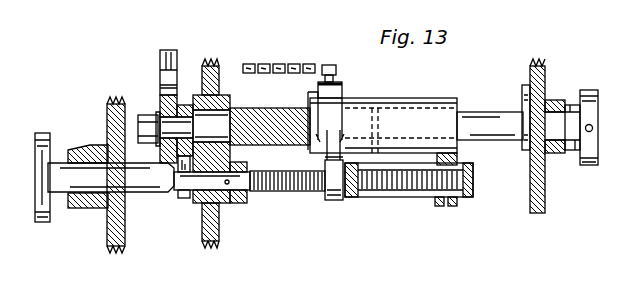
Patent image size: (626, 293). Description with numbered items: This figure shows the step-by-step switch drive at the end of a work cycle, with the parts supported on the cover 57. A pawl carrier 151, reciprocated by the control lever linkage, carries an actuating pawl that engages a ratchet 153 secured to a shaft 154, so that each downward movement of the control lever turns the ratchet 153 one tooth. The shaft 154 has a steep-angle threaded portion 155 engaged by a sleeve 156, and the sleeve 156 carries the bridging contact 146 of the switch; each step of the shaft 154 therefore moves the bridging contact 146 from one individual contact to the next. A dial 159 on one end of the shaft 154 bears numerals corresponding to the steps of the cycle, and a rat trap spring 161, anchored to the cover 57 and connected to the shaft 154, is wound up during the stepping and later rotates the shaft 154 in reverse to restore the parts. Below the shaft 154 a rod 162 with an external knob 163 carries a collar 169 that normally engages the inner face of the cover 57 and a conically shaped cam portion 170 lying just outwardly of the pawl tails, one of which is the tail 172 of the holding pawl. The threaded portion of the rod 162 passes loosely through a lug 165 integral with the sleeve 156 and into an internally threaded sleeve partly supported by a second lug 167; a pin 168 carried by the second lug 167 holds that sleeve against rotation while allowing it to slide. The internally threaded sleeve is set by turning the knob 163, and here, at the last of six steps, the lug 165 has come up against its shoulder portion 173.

The cover 57 is at (108, 117).
The bridging contact 146 is at (272, 64).
The pawl carrier 151 is at (162, 80).
The ratchet 153 is at (183, 97).
The shaft 154 is at (505, 142).
The threaded portion 155 is at (258, 108).
The sleeve 156 is at (384, 98).
The dial 159 is at (588, 90).
The rat trap spring 161 is at (522, 100).
The rod 162 is at (157, 192).
The knob 163 is at (41, 133).
The lug 165 is at (331, 200).
The second lug 167 is at (457, 203).
The pin 168 is at (446, 206).
The collar 169 is at (240, 203).
The conically shaped cam portion 170 is at (173, 195).
The tail 172 is at (190, 198).
The shoulder portion 173 is at (352, 198).